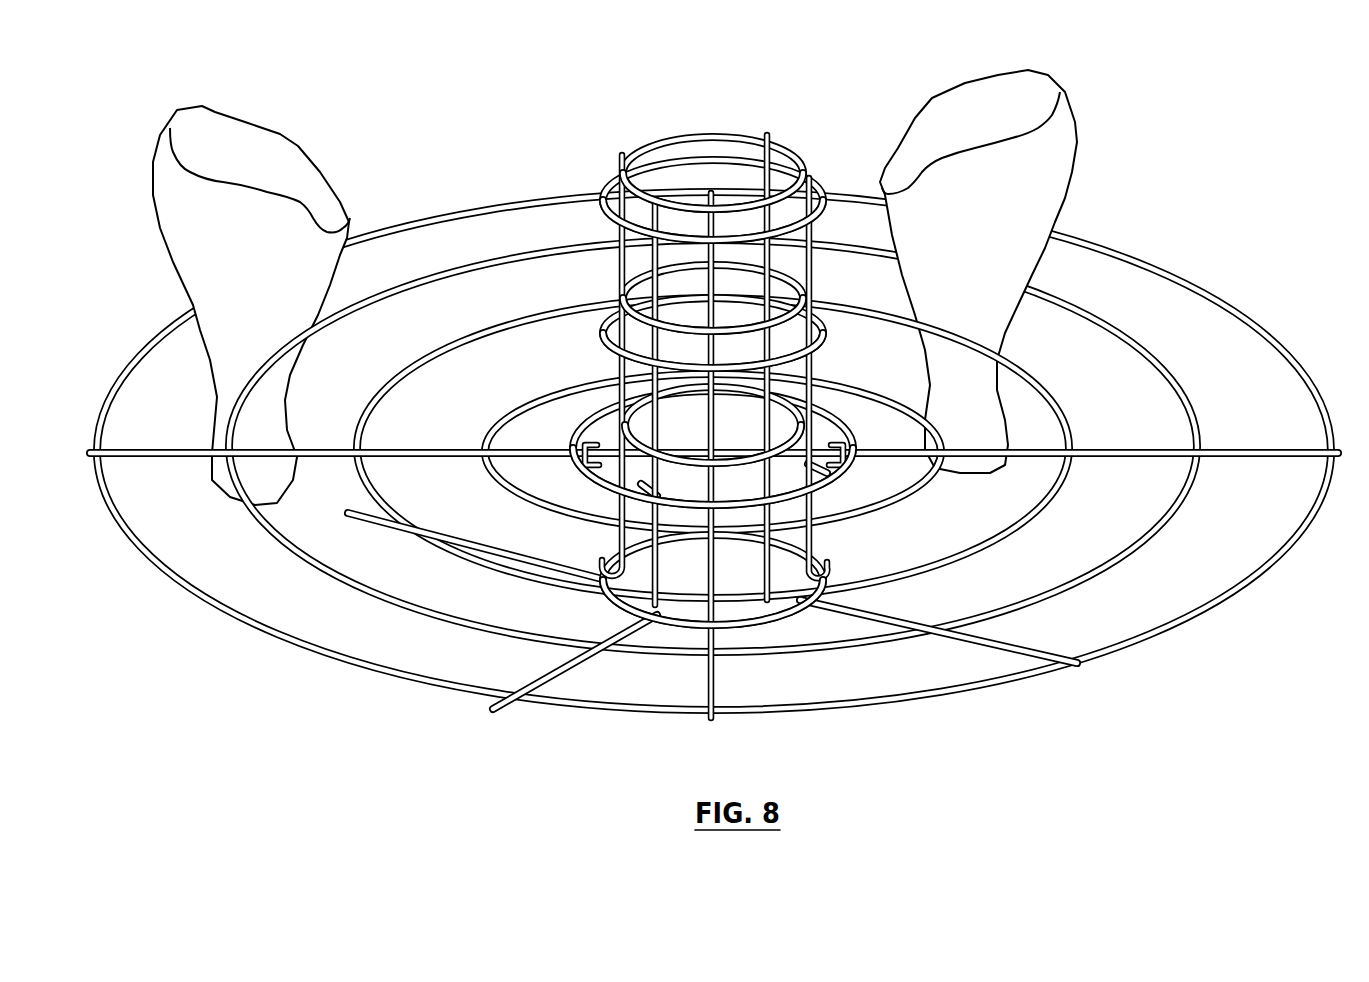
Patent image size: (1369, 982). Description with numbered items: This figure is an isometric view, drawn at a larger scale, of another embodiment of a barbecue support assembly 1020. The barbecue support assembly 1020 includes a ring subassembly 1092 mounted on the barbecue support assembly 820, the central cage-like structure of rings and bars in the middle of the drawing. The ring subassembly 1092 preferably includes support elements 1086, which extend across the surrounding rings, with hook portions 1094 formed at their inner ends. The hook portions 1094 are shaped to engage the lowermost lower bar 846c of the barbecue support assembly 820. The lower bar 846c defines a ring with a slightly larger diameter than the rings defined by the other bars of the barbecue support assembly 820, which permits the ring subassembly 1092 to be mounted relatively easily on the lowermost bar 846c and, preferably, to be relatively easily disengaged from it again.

The barbecue support assembly 820 is at (791, 137).
The barbecue support assembly 1020 is at (1134, 205).
The ring subassembly 1092 is at (1214, 288).
The support elements 1086 is at (459, 450).
The lowermost lower bar 846c is at (592, 425).
The hook portions 1094 is at (592, 466).